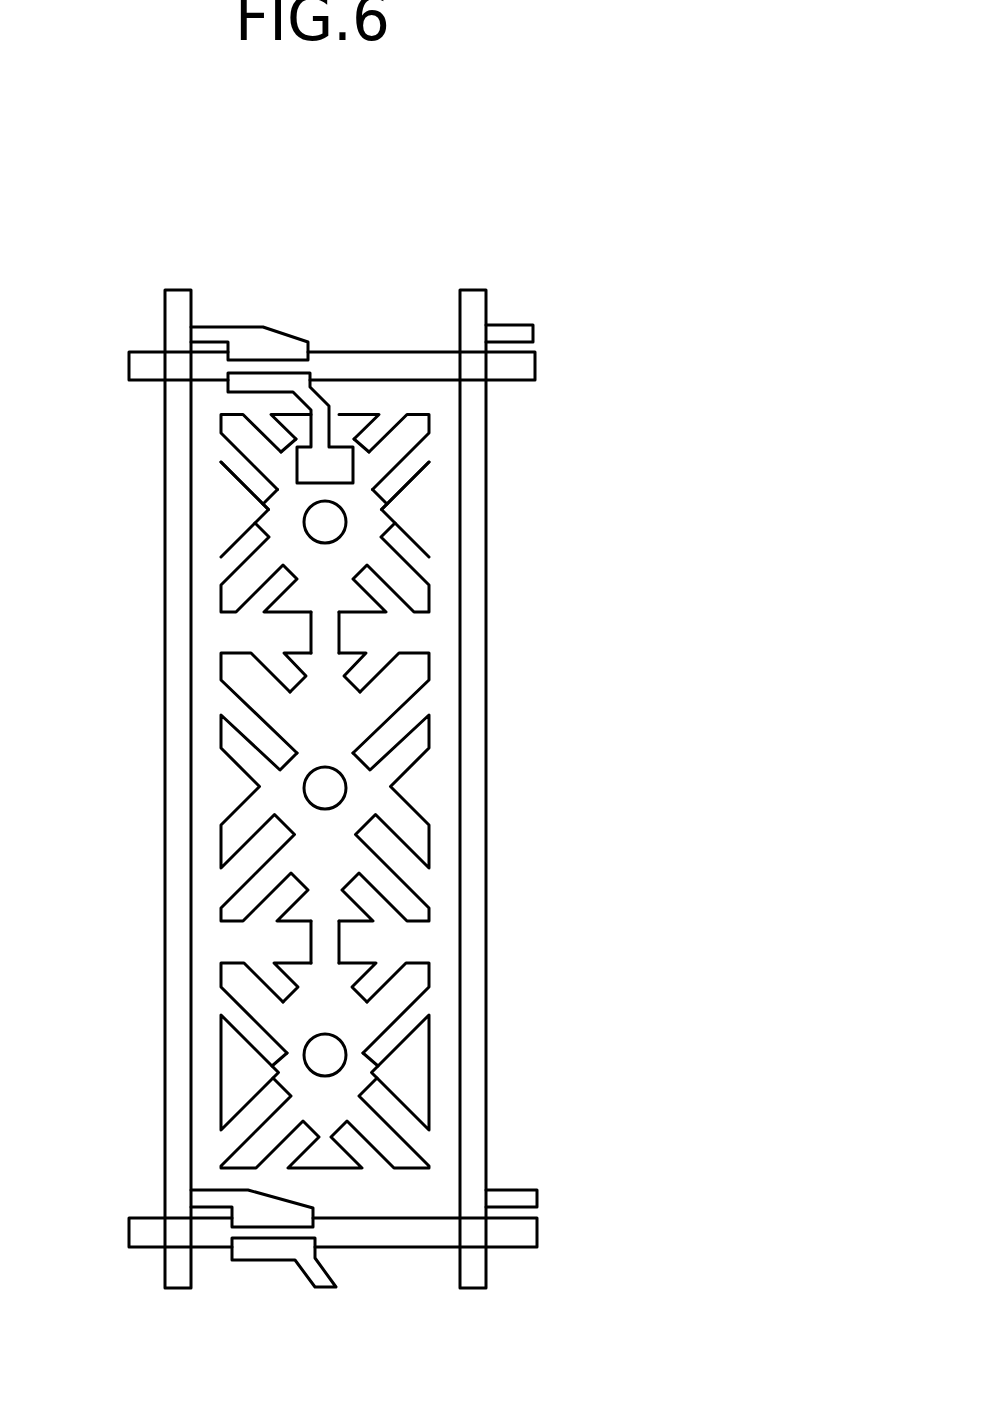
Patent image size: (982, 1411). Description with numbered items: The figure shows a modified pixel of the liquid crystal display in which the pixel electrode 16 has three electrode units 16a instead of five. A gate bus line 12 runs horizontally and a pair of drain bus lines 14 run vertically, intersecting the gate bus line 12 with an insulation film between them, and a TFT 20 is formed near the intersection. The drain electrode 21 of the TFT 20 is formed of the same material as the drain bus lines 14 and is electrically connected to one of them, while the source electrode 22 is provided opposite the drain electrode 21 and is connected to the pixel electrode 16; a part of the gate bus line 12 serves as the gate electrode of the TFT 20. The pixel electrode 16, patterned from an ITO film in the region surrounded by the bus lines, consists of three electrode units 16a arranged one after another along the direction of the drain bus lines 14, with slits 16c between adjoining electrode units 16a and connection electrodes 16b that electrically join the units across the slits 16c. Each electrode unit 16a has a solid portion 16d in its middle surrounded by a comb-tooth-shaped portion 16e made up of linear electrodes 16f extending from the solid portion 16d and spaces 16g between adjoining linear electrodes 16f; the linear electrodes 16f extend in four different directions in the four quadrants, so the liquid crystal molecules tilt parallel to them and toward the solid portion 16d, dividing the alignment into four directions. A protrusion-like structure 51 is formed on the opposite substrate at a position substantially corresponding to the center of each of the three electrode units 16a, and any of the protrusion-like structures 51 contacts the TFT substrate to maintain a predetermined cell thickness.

The gate bus line 12 is at (128, 365).
The drain bus line 14 is at (178, 290).
The pixel electrode 16 is at (537, 778).
The electrode unit 16a is at (493, 500).
The connection electrode 16b is at (332, 633).
The slit 16c is at (418, 648).
The solid portion 16d is at (356, 546).
The comb-tooth-shaped portion 16e is at (443, 446).
The linear electrode 16f is at (420, 423).
The space 16g is at (420, 452).
The TFT 20 is at (288, 744).
The drain electrode 21 is at (262, 342).
The source electrode 22 is at (291, 311).
The protrusion-like structure 51 is at (314, 521).